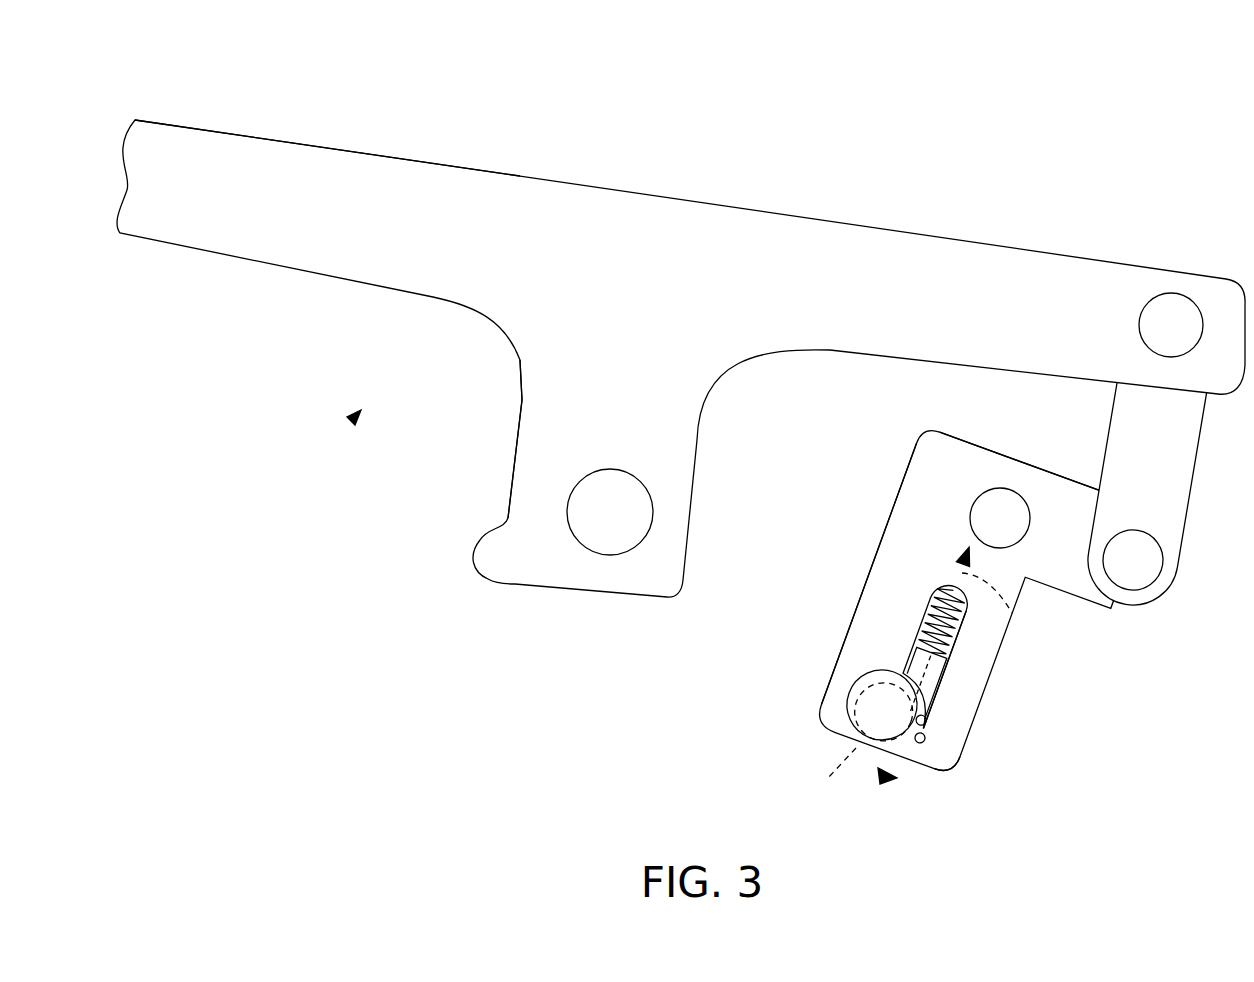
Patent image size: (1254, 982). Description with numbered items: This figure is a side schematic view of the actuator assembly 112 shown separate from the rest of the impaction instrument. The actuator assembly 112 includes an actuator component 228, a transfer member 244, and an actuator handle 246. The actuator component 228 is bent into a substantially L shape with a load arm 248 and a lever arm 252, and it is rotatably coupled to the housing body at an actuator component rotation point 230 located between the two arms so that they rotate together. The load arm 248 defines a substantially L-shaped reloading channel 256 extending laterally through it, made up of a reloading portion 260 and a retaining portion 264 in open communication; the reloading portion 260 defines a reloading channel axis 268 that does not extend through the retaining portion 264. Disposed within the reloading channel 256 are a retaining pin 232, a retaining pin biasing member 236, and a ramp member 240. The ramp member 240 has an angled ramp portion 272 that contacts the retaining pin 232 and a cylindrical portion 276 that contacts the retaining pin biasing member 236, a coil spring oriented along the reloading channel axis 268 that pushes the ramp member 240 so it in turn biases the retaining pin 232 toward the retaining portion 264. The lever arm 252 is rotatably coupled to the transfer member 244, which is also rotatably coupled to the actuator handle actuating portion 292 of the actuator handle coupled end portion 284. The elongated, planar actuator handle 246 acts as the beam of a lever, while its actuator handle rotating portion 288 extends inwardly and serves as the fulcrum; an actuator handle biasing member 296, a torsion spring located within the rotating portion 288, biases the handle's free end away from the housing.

The actuator assembly 112 is at (352, 420).
The actuator component 228 is at (926, 487).
The actuator component rotation point 230 is at (998, 516).
The retaining pin 232 is at (850, 683).
The retaining pin biasing member 236 is at (913, 607).
The ramp member 240 is at (932, 674).
The transfer member 244 is at (1168, 460).
The actuator handle 246 is at (271, 167).
The load arm 248 is at (863, 640).
The lever arm 252 is at (1065, 492).
The reloading channel 256 is at (947, 760).
The reloading portion 260 is at (962, 628).
The retaining portion 264 is at (847, 783).
The reloading channel axis 268 is at (1016, 616).
The ramp portion 272 is at (937, 730).
The cylindrical portion 276 is at (945, 657).
The actuator handle coupled end portion 284 is at (848, 258).
The actuator handle rotating portion 288 is at (540, 422).
The actuator handle actuating portion 292 is at (1147, 277).
The actuator handle biasing member 296 is at (573, 537).